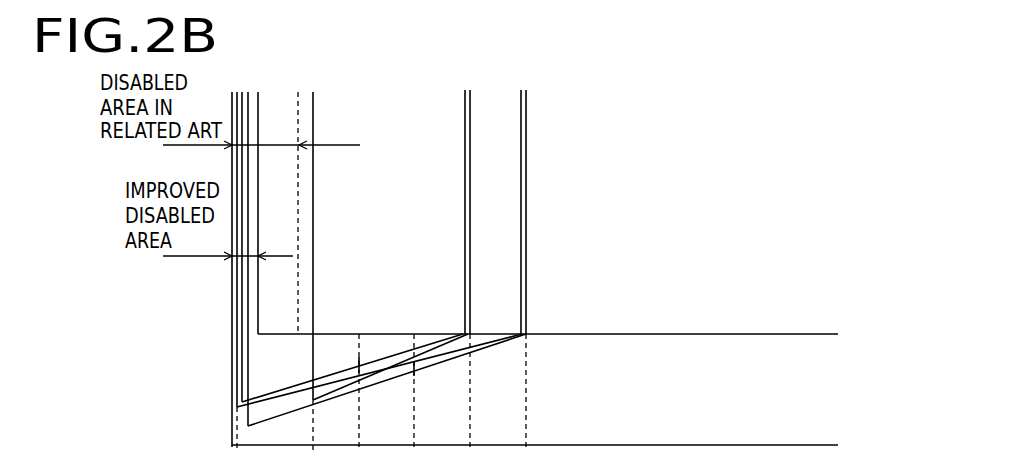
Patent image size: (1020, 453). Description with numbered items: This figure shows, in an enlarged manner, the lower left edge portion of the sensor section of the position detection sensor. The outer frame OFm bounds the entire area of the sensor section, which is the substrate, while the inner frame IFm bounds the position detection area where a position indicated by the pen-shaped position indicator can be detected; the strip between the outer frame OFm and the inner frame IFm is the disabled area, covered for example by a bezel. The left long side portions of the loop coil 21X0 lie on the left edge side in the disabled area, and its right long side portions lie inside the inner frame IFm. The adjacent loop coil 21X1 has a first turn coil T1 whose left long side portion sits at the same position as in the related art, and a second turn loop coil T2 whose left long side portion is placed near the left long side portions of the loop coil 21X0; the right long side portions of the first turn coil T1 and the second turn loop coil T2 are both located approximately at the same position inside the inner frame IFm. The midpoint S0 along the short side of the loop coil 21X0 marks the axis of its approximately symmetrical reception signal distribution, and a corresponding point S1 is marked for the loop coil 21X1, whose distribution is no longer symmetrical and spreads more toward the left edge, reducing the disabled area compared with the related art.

The loop coil 21X0 is at (463, 108).
The loop coil 21X1 is at (528, 107).
The first turn coil T1 is at (313, 173).
The second turn loop coil T2 is at (250, 211).
The midpoint S0 is at (358, 392).
The sampling point S1 is at (415, 370).
The inner frame IFm is at (682, 334).
The outer frame OFm is at (682, 445).